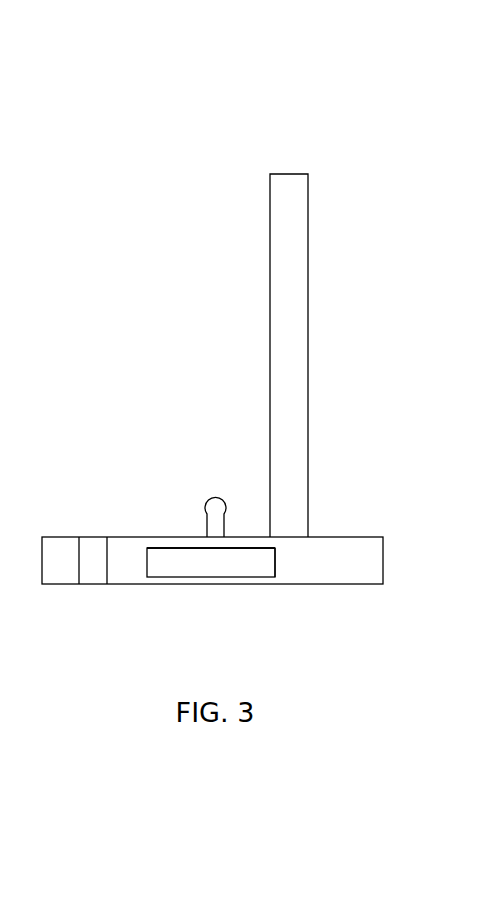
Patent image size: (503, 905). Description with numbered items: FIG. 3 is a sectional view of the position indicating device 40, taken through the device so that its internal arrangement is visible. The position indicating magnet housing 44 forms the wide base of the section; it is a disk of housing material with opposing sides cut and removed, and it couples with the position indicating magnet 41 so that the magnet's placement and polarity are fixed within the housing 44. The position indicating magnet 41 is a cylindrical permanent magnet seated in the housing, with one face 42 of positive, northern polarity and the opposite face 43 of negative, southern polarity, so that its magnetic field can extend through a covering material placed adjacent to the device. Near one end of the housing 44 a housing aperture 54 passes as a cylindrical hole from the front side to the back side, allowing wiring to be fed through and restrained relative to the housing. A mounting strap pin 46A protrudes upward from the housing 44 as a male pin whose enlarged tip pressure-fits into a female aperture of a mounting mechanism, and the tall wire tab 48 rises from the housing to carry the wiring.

The position indicating device 40 is at (302, 123).
The position indicating magnet 41 is at (260, 562).
The face of positive polarity 42 is at (221, 576).
The face of negative polarity 43 is at (249, 547).
The position indicating magnet housing 44 is at (367, 563).
The mounting strap pin 46A is at (215, 507).
The wire tab 48 is at (289, 265).
The housing aperture 54 is at (93, 569).